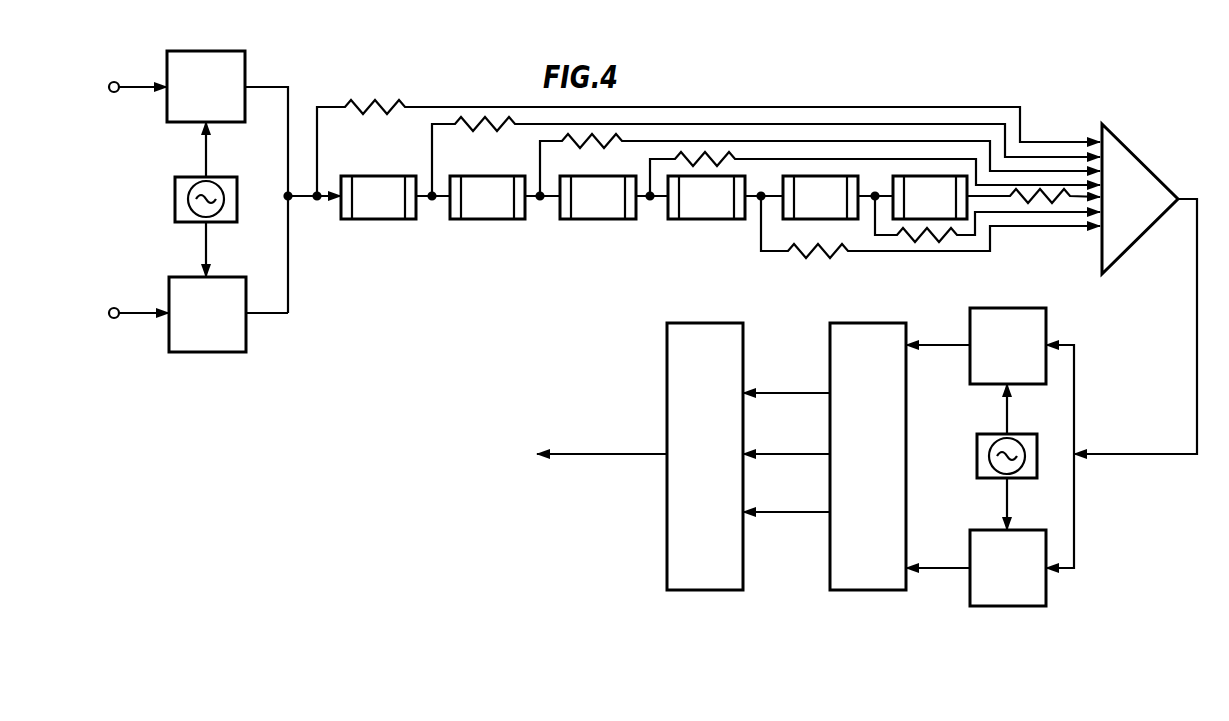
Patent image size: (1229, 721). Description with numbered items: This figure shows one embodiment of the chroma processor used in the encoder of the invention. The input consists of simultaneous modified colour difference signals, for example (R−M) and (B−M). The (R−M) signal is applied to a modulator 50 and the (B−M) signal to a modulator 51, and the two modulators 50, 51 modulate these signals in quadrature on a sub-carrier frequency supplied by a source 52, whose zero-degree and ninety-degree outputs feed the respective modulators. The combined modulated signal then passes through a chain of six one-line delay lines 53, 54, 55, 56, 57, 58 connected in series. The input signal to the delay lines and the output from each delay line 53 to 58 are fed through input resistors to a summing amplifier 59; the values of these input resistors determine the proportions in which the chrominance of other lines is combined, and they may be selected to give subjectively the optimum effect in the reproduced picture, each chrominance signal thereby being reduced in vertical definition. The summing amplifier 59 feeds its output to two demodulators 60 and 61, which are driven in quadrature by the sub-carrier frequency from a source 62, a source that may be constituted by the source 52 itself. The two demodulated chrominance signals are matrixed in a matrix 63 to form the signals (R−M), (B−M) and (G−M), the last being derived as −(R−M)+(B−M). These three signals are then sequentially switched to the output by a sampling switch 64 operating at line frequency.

The modulator 50 is at (226, 54).
The modulator 51 is at (214, 352).
The source 52 is at (173, 201).
The one-line delay line 53 is at (370, 220).
The one-line delay line 54 is at (478, 220).
The one-line delay line 55 is at (590, 220).
The one-line delay line 56 is at (698, 220).
The one-line delay line 57 is at (848, 222).
The one-line delay line 58 is at (960, 222).
The summing amplifier 59 is at (1110, 136).
The demodulator 60 is at (1022, 313).
The demodulator 61 is at (1030, 596).
The source 62 is at (977, 458).
The matrix 63 is at (867, 590).
The sampling switch 64 is at (705, 590).